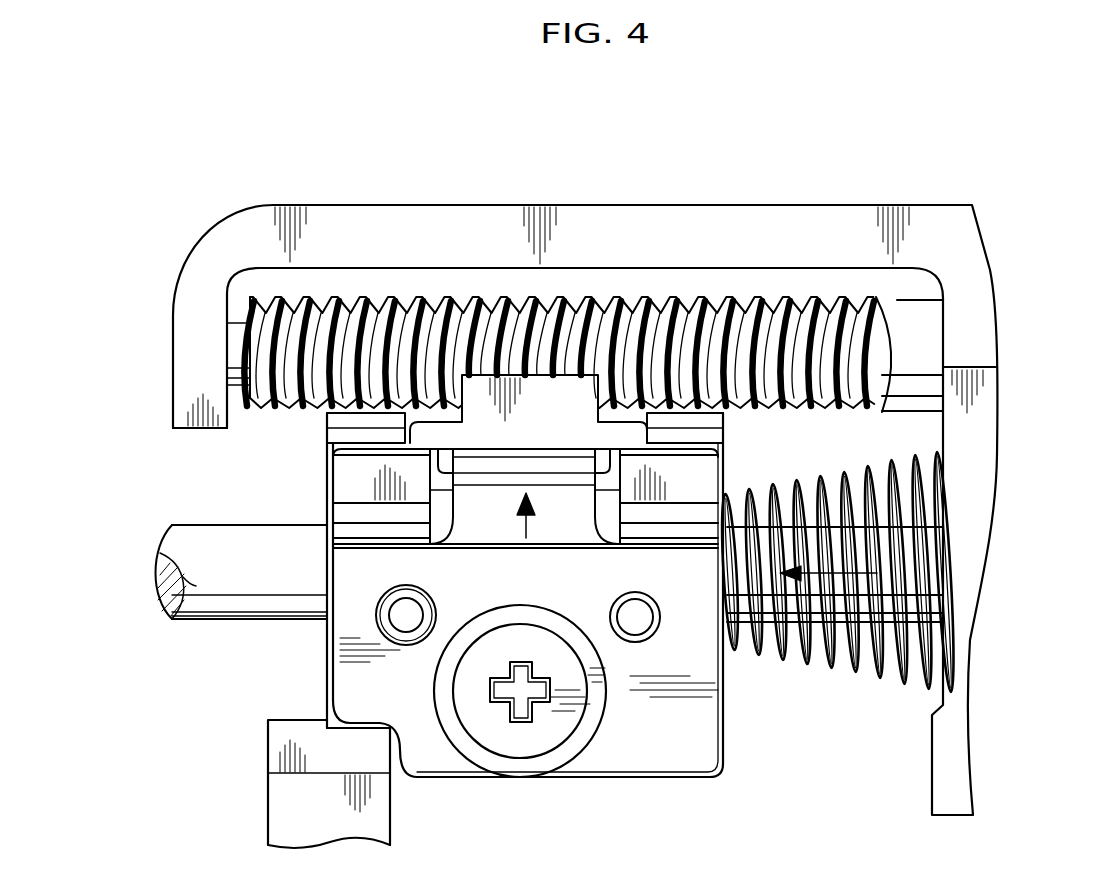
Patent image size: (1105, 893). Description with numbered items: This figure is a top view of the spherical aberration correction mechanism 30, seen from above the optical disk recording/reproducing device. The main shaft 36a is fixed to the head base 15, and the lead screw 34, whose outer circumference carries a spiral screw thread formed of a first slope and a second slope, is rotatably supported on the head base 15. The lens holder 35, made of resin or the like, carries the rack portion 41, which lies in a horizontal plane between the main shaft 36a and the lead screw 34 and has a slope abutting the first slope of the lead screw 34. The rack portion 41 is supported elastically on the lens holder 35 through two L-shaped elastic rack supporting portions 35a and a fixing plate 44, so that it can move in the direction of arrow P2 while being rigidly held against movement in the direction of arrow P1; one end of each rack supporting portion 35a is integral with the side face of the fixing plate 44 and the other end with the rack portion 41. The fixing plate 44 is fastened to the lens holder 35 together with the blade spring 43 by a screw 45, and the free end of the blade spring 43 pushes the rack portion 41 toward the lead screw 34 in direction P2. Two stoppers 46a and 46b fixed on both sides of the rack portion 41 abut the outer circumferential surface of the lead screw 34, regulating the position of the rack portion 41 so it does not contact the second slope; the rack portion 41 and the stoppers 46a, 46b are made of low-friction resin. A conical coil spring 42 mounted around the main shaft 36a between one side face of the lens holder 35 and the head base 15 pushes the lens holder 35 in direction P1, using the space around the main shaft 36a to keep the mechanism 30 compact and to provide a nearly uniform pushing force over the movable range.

The head base 15 is at (950, 742).
The spherical aberration correction mechanism 30 is at (148, 386).
The lead screw 34 is at (918, 337).
The lens holder 35 is at (285, 808).
The rack supporting portions 35a is at (355, 480).
The main shaft 36a is at (193, 588).
The rack portion 41 is at (535, 402).
The conical coil spring 42 is at (806, 662).
The blade spring 43 is at (486, 528).
The fixing plate 44 is at (370, 677).
The screw 45 is at (495, 733).
The stopper 46a is at (360, 428).
The stopper 46b is at (690, 428).
The arrow P1 is at (860, 565).
The arrow P2 is at (524, 523).